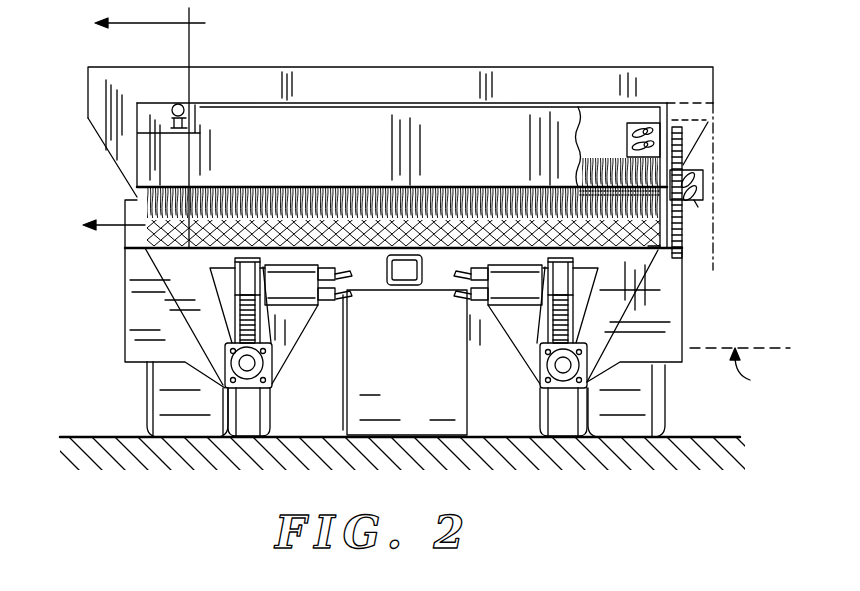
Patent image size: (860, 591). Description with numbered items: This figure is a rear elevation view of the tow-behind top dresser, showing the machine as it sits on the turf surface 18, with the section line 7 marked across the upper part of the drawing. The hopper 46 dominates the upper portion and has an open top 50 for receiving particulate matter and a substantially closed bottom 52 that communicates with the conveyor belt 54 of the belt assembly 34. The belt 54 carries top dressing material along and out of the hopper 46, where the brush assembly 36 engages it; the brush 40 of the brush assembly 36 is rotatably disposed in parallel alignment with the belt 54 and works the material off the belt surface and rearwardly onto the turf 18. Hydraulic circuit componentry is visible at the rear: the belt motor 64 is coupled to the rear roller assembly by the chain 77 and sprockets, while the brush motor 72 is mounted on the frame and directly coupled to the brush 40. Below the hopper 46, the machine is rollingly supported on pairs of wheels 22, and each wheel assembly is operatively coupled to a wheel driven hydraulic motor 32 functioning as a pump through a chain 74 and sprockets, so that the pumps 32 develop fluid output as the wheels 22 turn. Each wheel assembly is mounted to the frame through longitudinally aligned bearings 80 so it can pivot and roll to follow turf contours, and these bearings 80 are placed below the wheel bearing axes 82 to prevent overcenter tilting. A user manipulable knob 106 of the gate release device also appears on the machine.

The section line 7- 7 is at (136, 127).
The turf surface 18 is at (100, 436).
The wheels 22 is at (145, 378).
The hydraulic motor 32 is at (468, 302).
The belt assembly 34 is at (658, 240).
The brush assembly 36 is at (656, 209).
The brush 40 is at (442, 195).
The hopper 46 is at (460, 74).
The open top 50 is at (126, 66).
The closed bottom 52 is at (137, 195).
The conveyor belt 54 is at (147, 236).
The belt motor 64 is at (640, 124).
The brush motor 72 is at (704, 176).
The chain 74 is at (243, 322).
The chain 77 is at (682, 130).
The bearings 80 is at (540, 377).
The wheel bearing axes 82 is at (740, 371).
The knob 106 is at (180, 104).